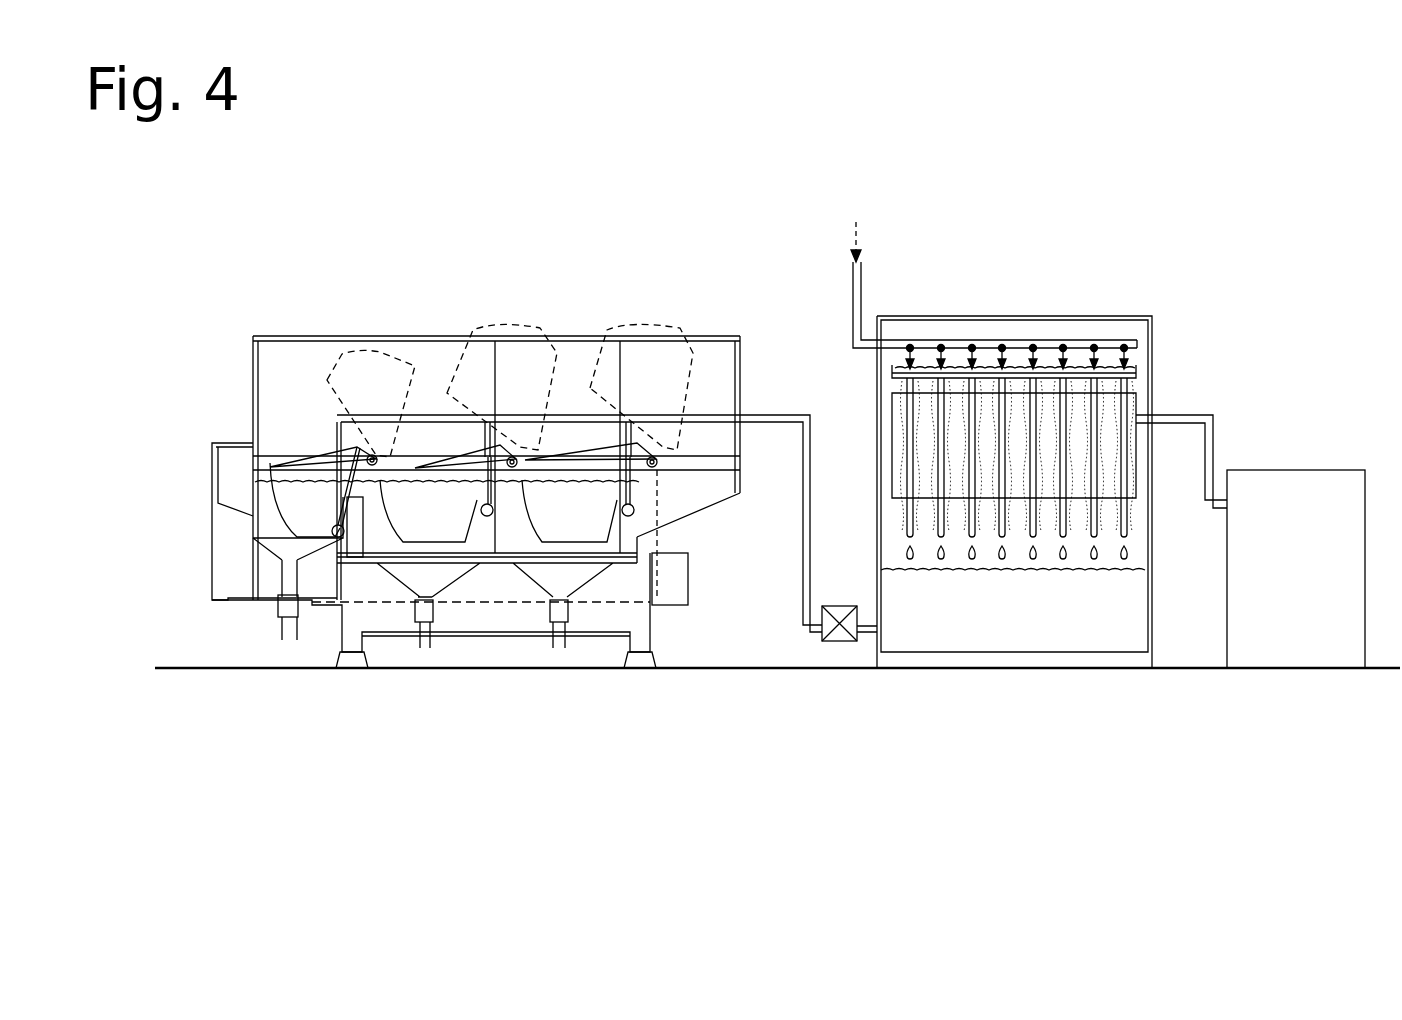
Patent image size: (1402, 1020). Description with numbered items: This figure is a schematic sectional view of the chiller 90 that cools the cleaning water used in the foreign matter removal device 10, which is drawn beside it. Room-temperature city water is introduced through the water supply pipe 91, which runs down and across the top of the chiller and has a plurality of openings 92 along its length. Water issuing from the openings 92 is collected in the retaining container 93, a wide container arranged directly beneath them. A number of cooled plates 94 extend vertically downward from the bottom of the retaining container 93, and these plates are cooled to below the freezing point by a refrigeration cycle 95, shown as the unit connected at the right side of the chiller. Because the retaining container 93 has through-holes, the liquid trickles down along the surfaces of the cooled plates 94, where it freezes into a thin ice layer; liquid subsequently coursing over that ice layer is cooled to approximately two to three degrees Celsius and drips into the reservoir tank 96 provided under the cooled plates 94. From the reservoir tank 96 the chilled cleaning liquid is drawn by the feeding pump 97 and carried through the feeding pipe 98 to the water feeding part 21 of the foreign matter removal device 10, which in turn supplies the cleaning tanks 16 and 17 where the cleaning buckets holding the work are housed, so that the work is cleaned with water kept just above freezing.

The foreign matter removal device 10 is at (726, 325).
The cleaning tank 16 is at (378, 542).
The cleaning tank 17 is at (528, 545).
The water feeding part 21 is at (333, 528).
The chiller 90 is at (1163, 302).
The water supply pipe 91 is at (860, 289).
The openings 92 is at (1002, 345).
The retaining container 93 is at (1133, 377).
The cooled plates 94 is at (1130, 442).
The refrigeration cycle 95 is at (1320, 468).
The reservoir tank 96 is at (1137, 613).
The feeding pump 97 is at (843, 606).
The feeding pipe 98 is at (803, 530).